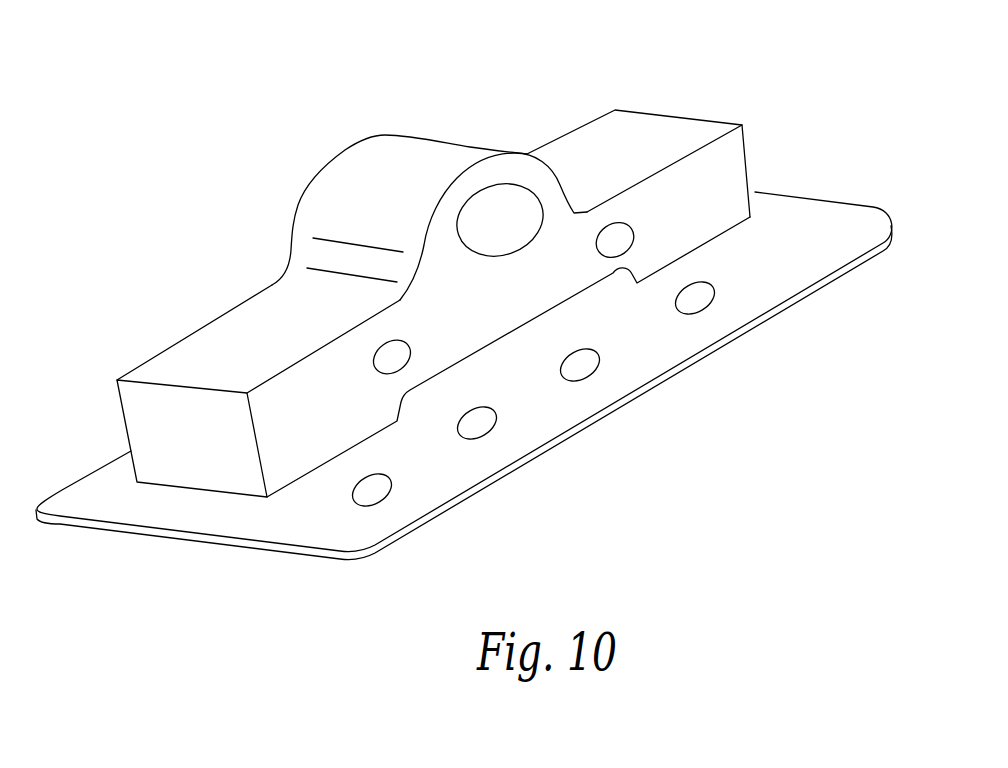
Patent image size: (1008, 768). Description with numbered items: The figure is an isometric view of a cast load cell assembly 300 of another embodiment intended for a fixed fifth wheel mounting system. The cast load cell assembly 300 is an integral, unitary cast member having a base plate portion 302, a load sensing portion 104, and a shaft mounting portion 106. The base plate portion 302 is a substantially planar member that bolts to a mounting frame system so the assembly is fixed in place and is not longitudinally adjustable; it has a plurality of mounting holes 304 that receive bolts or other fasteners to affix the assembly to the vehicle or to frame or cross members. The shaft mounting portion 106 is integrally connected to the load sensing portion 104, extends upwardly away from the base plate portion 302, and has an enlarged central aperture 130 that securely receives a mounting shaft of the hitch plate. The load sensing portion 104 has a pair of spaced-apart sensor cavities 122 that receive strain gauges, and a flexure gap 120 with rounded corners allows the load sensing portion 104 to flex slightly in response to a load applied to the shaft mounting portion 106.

The cast load cell assembly 300 is at (541, 96).
The base plate portion 302 is at (155, 522).
The mounting holes 304 is at (494, 436).
The load sensing portion 104 is at (193, 358).
The shaft mounting portion 106 is at (317, 205).
The central aperture 130 is at (513, 217).
The sensor cavities 122 is at (377, 345).
The flexure gap 120 is at (507, 372).